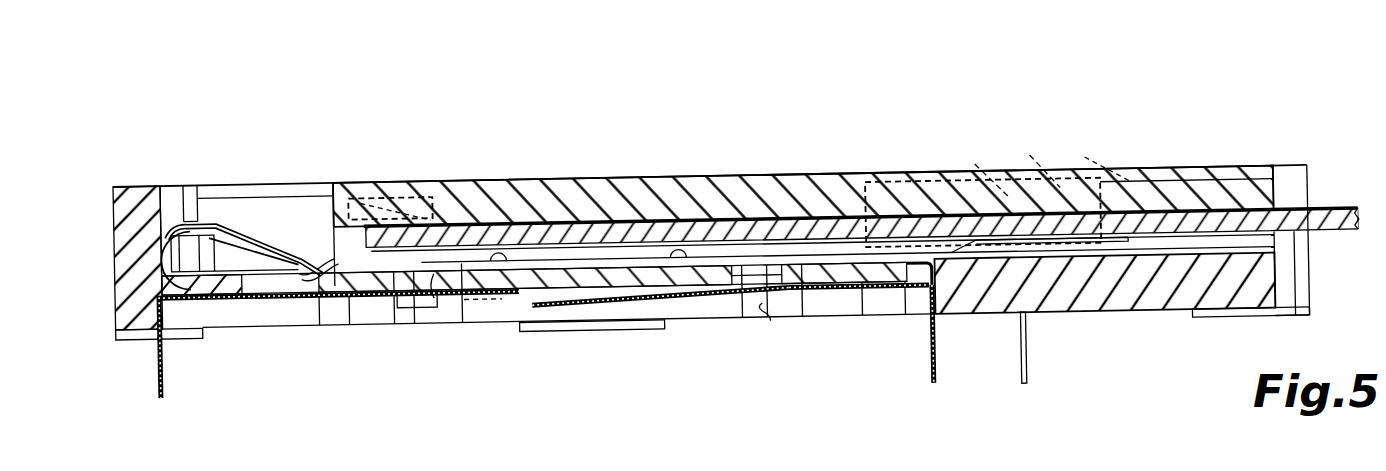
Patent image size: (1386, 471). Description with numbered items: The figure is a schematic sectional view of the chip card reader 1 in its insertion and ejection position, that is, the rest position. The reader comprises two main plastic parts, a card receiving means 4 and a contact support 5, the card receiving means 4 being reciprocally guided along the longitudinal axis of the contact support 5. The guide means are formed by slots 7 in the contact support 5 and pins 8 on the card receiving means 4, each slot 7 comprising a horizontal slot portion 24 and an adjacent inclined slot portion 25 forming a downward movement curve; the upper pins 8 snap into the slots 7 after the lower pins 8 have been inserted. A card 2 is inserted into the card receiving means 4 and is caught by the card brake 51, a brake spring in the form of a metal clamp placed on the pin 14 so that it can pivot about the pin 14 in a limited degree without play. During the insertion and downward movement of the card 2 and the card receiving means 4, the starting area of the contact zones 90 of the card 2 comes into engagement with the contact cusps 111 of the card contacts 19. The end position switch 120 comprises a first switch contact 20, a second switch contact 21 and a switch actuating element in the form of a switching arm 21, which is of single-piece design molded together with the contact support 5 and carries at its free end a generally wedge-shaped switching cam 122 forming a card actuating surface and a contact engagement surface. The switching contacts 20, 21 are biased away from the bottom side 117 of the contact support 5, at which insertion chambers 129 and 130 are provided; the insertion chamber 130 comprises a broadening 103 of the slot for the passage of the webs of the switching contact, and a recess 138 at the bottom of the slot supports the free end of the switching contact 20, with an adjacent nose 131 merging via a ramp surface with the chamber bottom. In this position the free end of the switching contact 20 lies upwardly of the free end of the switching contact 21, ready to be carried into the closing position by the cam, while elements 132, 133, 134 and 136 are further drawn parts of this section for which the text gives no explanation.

The electrical connector 1 is at (787, 157).
The card 2 is at (1343, 210).
The card receiving means 4 is at (668, 178).
The contact support 5 is at (1138, 330).
The slots 7 is at (230, 200).
The pins 8 is at (425, 212).
The pin 14 is at (163, 255).
The card contacts 19 is at (1023, 363).
The first switch contact 20 is at (162, 387).
The switching arm 21 is at (934, 381).
The horizontal slot portion 24 is at (378, 212).
The inclined slot portion 25 is at (260, 262).
The card brake 51 is at (220, 222).
The contact zones 90 is at (622, 262).
The broadening 103 is at (332, 320).
The contact cusps 111 is at (494, 262).
The bottom side 117 is at (1246, 343).
The end position switch 120 is at (546, 345).
The switching cam 122 is at (405, 312).
The insertion chamber 129 is at (245, 310).
The insertion chamber 130 is at (870, 300).
The nose 131 is at (640, 313).
The lower hatched wall 132 is at (690, 287).
The shield bend 133 is at (932, 333).
The contact loop 134 is at (305, 265).
The bottom plate 136 is at (594, 333).
The recess 138 is at (497, 312).